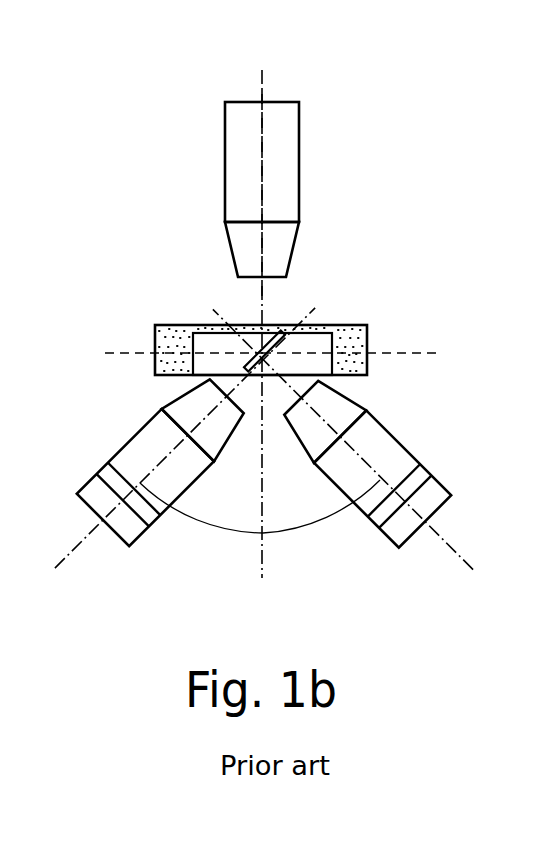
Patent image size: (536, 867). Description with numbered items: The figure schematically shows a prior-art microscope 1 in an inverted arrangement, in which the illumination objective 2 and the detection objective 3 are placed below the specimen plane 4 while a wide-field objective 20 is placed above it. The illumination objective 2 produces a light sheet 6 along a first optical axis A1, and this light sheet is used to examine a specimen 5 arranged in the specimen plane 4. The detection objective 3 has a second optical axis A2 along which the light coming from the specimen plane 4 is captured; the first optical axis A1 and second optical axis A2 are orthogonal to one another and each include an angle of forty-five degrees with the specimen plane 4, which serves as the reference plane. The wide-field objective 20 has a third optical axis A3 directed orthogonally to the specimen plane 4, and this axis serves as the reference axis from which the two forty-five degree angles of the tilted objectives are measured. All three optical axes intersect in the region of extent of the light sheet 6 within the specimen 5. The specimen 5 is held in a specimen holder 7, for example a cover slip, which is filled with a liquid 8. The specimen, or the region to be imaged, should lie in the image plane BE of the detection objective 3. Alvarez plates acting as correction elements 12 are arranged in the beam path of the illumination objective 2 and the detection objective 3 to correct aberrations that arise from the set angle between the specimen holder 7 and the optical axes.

The microscope 1 is at (133, 118).
The illumination objective 2 is at (153, 438).
The detection objective 3 is at (380, 438).
The specimen plane 4 is at (397, 352).
The specimen 5 is at (310, 342).
The light sheet 6 is at (250, 330).
The specimen holder 7 is at (157, 347).
The liquid 8 is at (160, 325).
The correction elements 12 is at (108, 477).
The wide-field objective 20 is at (280, 148).
The first optical axis A1 is at (88, 535).
The second optical axis A2 is at (432, 528).
The third optical axis A3 is at (262, 80).
The image plane BE is at (258, 332).